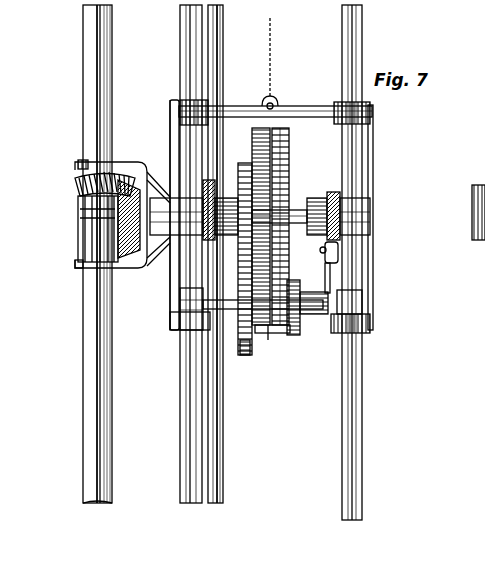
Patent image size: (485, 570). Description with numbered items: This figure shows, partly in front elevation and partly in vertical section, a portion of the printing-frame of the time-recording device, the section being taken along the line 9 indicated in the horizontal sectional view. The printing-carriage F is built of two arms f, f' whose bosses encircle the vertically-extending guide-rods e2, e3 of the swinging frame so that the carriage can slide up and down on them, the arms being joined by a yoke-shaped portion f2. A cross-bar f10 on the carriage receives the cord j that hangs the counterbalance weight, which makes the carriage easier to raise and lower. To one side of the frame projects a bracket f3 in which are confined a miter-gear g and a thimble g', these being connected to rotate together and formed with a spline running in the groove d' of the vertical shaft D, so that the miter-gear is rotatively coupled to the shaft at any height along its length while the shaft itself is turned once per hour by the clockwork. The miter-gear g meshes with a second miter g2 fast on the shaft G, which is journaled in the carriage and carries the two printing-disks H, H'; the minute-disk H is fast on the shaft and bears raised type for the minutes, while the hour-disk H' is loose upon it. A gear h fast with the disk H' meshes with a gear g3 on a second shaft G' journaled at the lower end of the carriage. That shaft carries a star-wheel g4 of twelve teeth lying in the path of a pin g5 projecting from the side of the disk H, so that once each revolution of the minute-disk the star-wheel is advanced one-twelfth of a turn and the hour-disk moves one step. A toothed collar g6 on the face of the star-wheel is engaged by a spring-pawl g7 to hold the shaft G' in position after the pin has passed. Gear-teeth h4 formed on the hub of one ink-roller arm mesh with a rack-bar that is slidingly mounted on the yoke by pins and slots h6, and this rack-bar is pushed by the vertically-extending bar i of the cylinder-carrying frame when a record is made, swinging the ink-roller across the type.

The shaft D is at (96, 303).
The groove d' is at (66, 254).
The guide-rod e2 is at (192, 503).
The guide-rod e3 is at (352, 520).
The vertically-extending bar i is at (224, 465).
The printing-carriage F is at (160, 97).
The arm f' is at (103, 215).
The cross-bar f10 is at (340, 112).
The arm f is at (384, 217).
The yoke-shaped portion f2 is at (333, 215).
The bracket f3 is at (74, 266).
The cord j is at (270, 20).
The printing-disk H' is at (250, 194).
The printing-disk H is at (287, 194).
The gear h is at (238, 170).
The gear-teeth h4 is at (224, 262).
The slots h6 is at (204, 190).
The shaft 9 is at (100, 215).
The shaft G is at (349, 204).
The second shaft G' is at (272, 362).
The miter-gear g is at (88, 214).
The thimble g' is at (74, 229).
The second miter g2 is at (133, 252).
The gear g3 is at (246, 356).
The star-wheel g4 is at (300, 335).
The pin g5 is at (340, 298).
The toothed collar g6 is at (345, 322).
The spring-pawl g7 is at (338, 262).